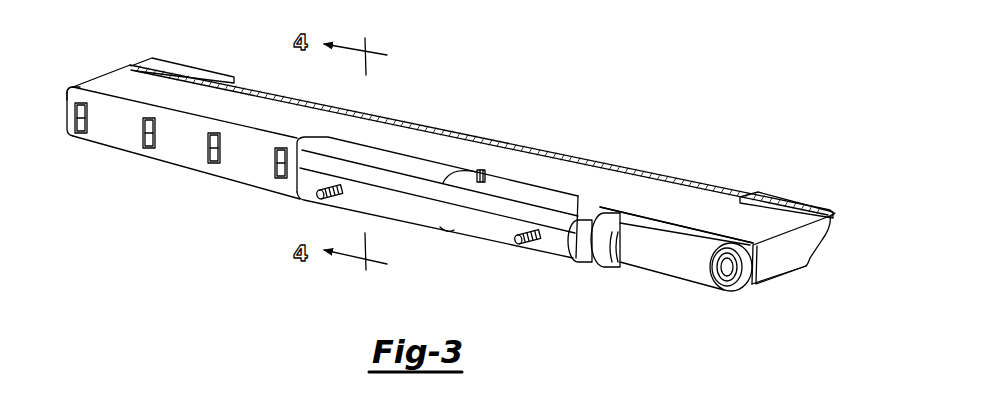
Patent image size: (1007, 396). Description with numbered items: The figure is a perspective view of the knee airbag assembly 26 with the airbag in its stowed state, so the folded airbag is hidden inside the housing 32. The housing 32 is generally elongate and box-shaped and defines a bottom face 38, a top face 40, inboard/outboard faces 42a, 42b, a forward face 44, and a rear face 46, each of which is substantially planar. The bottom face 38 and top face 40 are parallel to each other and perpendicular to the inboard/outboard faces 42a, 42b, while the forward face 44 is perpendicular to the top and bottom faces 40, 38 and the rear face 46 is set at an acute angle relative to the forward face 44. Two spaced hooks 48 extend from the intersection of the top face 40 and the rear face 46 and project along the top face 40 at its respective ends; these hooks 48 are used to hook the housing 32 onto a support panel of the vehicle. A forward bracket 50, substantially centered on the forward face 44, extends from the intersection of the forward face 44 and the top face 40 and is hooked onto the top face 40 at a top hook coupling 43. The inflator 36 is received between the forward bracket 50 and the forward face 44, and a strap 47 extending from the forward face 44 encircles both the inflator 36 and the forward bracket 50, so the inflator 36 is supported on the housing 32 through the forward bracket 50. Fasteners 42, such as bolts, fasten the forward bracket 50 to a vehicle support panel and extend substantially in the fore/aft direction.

The knee airbag assembly 26 is at (546, 130).
The housing 32 is at (254, 100).
The inflator 36 is at (684, 270).
The bottom face 38 is at (773, 285).
The top face 40 is at (635, 188).
The fasteners 42 is at (318, 194).
The inboard/outboard face 42a is at (782, 266).
The inboard/outboard face 42b is at (84, 80).
The top hook coupling 43 is at (484, 166).
The forward face 44 is at (176, 143).
The rear face 46 is at (826, 237).
The strap 47 is at (612, 214).
The hooks 48 is at (178, 71).
The forward bracket 50 is at (448, 212).